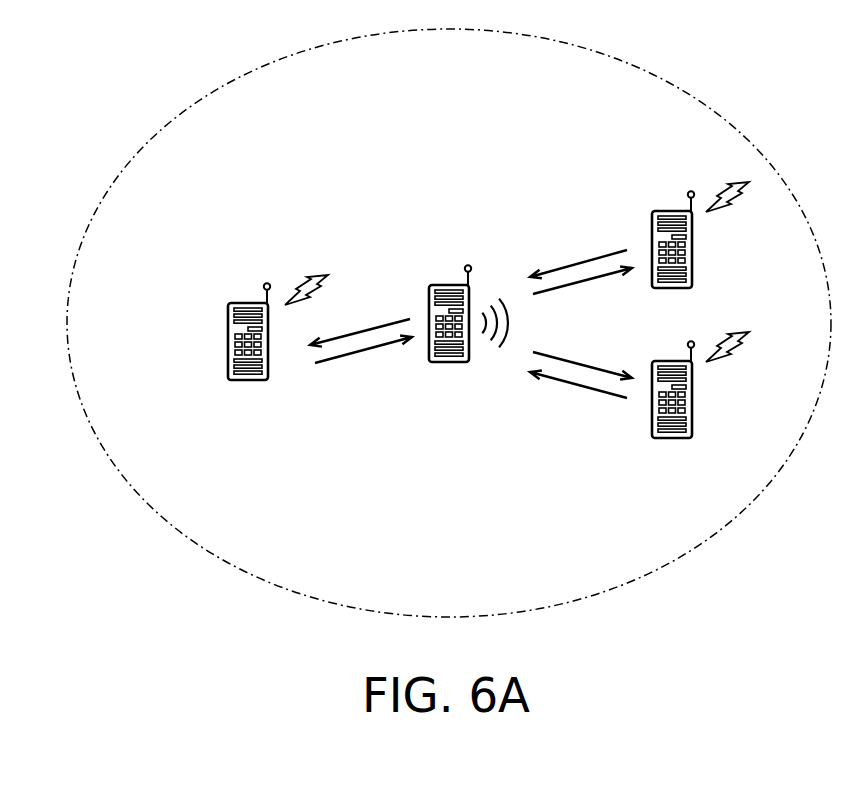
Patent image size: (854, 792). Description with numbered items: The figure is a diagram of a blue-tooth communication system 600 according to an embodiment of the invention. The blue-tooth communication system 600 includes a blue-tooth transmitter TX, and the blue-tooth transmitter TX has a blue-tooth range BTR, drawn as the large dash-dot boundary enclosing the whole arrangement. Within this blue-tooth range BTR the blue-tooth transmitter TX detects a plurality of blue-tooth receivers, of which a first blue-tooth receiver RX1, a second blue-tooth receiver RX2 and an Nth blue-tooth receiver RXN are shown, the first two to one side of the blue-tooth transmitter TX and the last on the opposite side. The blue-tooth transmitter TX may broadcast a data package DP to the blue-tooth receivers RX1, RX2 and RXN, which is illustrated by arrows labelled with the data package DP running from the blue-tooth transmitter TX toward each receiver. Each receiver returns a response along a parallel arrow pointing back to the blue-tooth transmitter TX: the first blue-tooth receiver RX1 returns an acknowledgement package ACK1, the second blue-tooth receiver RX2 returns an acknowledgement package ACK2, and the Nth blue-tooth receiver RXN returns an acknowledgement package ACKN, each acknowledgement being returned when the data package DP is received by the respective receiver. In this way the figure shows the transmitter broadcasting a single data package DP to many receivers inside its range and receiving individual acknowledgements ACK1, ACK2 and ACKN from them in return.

The blue-tooth communication system 600 is at (449, 329).
The blue-tooth range BTR is at (693, 93).
The blue-tooth transmitter TX is at (468, 330).
The blue-tooth receiver RXN is at (278, 344).
The blue-tooth receiver RX1 is at (700, 253).
The blue-tooth receiver RX2 is at (700, 403).
The data package DP is at (471, 323).
The acknowledgement package ACKN is at (363, 365).
The acknowledgement package ACK1 is at (578, 252).
The acknowledgement package ACK2 is at (578, 397).